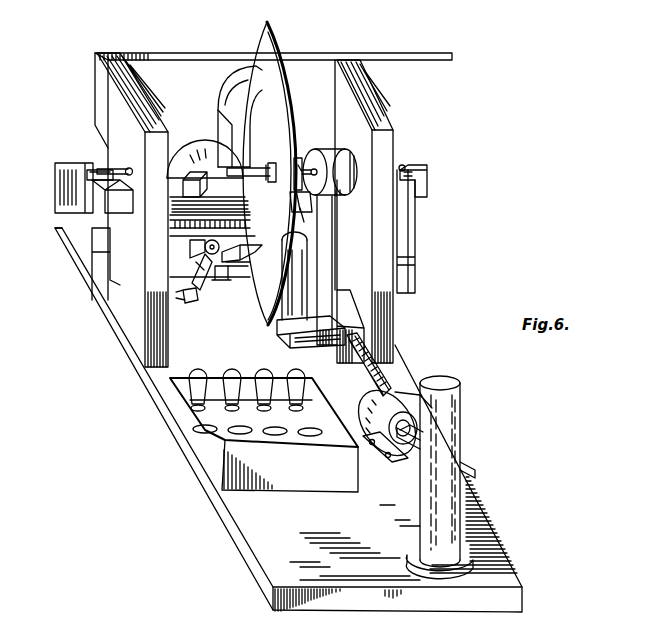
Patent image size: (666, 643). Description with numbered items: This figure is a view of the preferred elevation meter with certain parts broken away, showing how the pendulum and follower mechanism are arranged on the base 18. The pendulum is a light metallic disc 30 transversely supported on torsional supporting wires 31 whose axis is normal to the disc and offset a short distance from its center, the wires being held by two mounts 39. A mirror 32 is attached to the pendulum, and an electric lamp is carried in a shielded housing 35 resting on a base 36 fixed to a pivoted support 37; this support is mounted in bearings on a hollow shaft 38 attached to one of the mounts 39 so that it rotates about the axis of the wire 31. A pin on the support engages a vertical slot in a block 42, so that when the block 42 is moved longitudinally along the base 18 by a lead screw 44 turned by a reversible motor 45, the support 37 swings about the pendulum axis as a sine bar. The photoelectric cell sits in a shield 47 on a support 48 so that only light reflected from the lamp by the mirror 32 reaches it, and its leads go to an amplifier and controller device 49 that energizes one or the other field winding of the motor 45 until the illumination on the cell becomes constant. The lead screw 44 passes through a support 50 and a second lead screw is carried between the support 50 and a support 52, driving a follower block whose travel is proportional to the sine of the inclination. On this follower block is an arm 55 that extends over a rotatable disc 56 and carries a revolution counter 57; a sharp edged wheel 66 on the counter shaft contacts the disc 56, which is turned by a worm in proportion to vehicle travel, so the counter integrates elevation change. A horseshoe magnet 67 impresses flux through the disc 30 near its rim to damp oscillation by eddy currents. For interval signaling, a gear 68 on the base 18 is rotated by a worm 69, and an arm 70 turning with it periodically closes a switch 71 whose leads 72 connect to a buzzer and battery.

The base 18 is at (250, 567).
The pendulum disc 30 is at (283, 42).
The torsional supporting wires 31 is at (128, 168).
The mirror 32 is at (300, 160).
The shielded housing 35 is at (292, 307).
The base 36 is at (307, 338).
The pivoted support 37 is at (334, 245).
The hollow shaft 38 is at (352, 164).
The mounts 39 is at (118, 108).
The block 42 is at (355, 317).
The lead screw 44 is at (387, 372).
The reversible motor 45 is at (400, 392).
The shield 47 is at (462, 420).
The support 48 is at (478, 508).
The amplifier and controller device 49 is at (230, 478).
The support 50 is at (92, 250).
The support 52 is at (55, 198).
The arm 55 is at (298, 200).
The rotatable disc 56 is at (182, 212).
The revolution counter 57 is at (183, 186).
The sharp edged wheel 66 is at (187, 135).
The horseshoe magnet 67 is at (232, 65).
The gear 68 is at (228, 280).
The worm 69 is at (205, 252).
The arm 70 is at (238, 258).
The switch 71 is at (198, 290).
The leads 72 is at (192, 303).